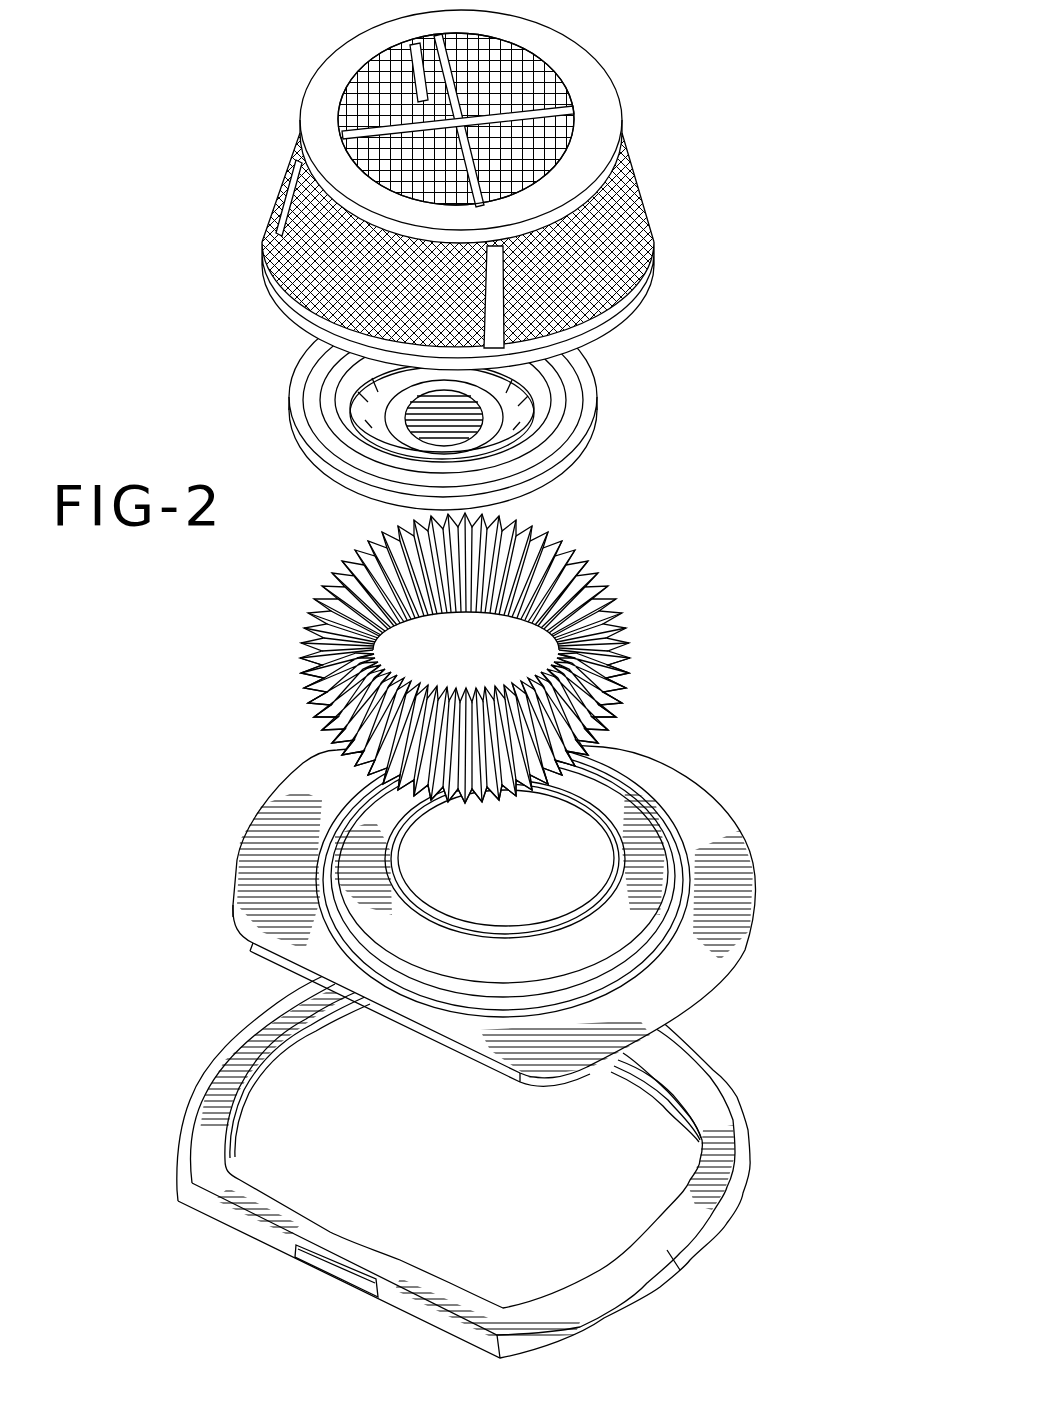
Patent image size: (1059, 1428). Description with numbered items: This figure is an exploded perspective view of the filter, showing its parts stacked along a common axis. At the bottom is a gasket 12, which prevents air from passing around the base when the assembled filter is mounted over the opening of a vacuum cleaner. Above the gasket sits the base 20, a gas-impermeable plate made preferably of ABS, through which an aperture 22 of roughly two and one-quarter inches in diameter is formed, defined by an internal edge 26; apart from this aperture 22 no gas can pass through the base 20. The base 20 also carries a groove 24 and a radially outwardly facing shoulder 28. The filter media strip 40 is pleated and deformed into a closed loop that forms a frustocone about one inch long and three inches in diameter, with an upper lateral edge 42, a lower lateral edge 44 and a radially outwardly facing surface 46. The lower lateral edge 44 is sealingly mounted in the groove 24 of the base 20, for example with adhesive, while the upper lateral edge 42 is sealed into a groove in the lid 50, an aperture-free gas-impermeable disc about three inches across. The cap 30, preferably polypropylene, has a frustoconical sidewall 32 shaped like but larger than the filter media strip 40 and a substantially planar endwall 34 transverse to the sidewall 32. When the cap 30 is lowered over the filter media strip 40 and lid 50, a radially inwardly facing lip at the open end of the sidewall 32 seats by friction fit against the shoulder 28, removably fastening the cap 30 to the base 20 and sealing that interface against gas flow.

The gasket 12 is at (747, 1090).
The base 20 is at (535, 914).
The aperture 22 is at (498, 871).
The groove 24 is at (372, 838).
The internal edge 26 is at (582, 790).
The shoulder 28 is at (670, 922).
The cap 30 is at (460, 185).
The sidewall 32 is at (620, 226).
The endwall 34 is at (545, 52).
The filter media strip 40 is at (475, 647).
The upper lateral edge 42 is at (555, 545).
The lower lateral edge 44 is at (618, 740).
The radially outwardly facing surface 46 is at (322, 690).
The lid 50 is at (605, 425).